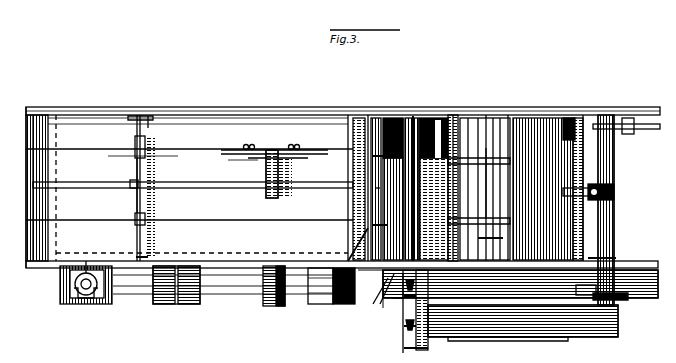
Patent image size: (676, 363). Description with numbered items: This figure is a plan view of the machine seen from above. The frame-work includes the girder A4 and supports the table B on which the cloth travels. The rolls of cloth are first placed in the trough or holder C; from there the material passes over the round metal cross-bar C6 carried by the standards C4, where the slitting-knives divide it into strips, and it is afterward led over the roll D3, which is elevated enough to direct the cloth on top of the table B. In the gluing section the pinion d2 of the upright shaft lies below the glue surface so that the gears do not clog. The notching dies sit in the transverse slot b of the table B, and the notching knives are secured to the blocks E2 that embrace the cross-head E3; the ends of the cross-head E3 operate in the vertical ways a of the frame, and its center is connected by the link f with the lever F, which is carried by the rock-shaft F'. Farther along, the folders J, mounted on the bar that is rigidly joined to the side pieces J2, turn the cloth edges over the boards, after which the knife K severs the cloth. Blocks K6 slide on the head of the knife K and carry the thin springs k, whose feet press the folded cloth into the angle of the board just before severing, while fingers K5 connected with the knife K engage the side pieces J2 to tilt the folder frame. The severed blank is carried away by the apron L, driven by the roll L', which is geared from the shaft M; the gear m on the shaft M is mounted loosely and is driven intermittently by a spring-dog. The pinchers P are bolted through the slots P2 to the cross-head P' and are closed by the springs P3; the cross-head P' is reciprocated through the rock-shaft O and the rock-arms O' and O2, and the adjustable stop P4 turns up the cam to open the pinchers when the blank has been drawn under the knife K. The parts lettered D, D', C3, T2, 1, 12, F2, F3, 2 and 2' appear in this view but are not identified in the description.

The girder A4 is at (236, 99).
The roll D3 is at (20, 118).
The table B is at (189, 188).
The lever F is at (193, 172).
The rock-shaft F' is at (309, 174).
The cross-head E3 is at (127, 150).
The blocks E2 is at (146, 154).
The link f is at (122, 180).
The vertical ways a is at (128, 111).
The transverse slot b is at (142, 120).
The wheel housing D' is at (96, 288).
The wheel D is at (101, 278).
The pinion d2 is at (56, 264).
The support column C3 is at (170, 294).
The standards C4 is at (268, 298).
The cross-bar C6 is at (278, 267).
The trough C is at (335, 296).
The column T2 is at (373, 112).
The rod 1 is at (368, 108).
The folders J is at (400, 108).
The plate 12 is at (408, 108).
The roll L' is at (375, 186).
The springs k is at (434, 189).
The fingers K5 is at (443, 107).
The knife K is at (455, 107).
The blocks K6 is at (470, 150).
The cross-head P' is at (493, 154).
The pinchers P is at (492, 204).
The slots P2 is at (490, 247).
The springs P3 is at (502, 107).
The link F2 is at (365, 244).
The apron L is at (570, 188).
The rock-shaft O is at (613, 210).
The rock-arm O' is at (606, 240).
The rock-arm O2 is at (606, 184).
The adjustable stop P4 is at (648, 118).
The base 2 is at (520, 311).
The base plate 2' is at (508, 346).
The shaft M is at (396, 330).
The gear m is at (368, 296).
The side pieces J2 is at (392, 292).
The link F3 is at (379, 289).